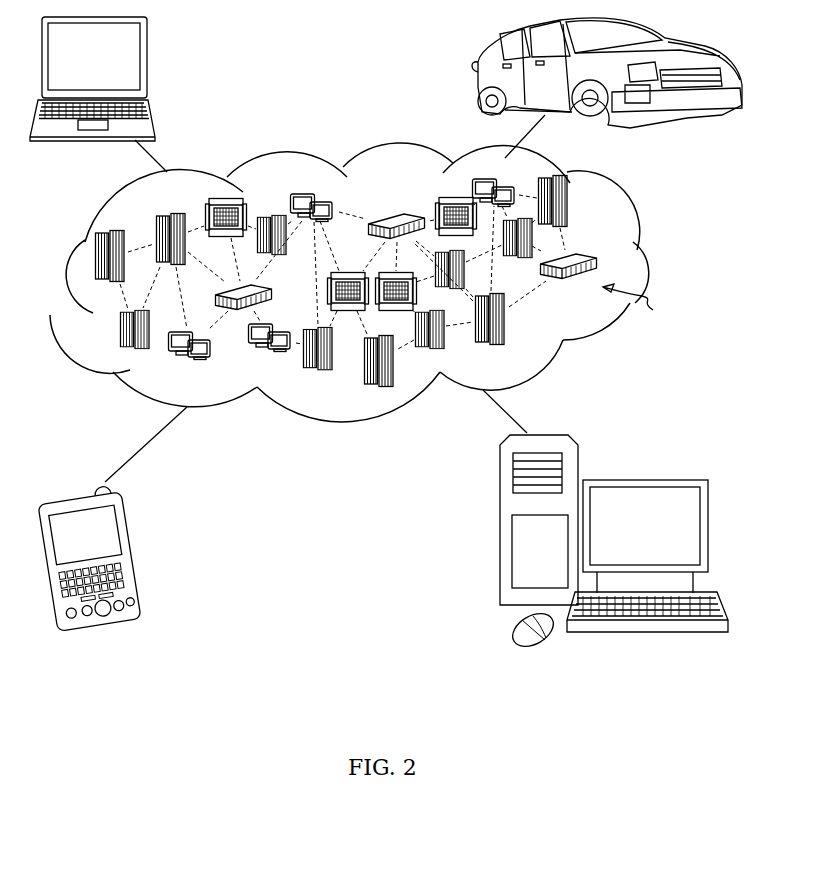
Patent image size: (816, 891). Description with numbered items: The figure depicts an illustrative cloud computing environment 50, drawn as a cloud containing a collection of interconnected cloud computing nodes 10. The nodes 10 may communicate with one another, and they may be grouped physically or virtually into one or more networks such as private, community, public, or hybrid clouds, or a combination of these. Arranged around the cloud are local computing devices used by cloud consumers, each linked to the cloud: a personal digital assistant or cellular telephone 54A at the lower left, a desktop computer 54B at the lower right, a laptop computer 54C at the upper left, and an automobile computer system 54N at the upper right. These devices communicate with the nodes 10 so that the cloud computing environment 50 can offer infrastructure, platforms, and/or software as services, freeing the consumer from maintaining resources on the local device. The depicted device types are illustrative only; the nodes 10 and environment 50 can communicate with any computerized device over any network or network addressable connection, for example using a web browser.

The cloud computing nodes 10 is at (642, 303).
The cloud computing environment 50 is at (647, 263).
The personal digital assistant or cellular telephone 54A is at (135, 547).
The desktop computer 54B is at (643, 478).
The laptop computer 54C is at (148, 63).
The automobile computer system 54N is at (478, 78).